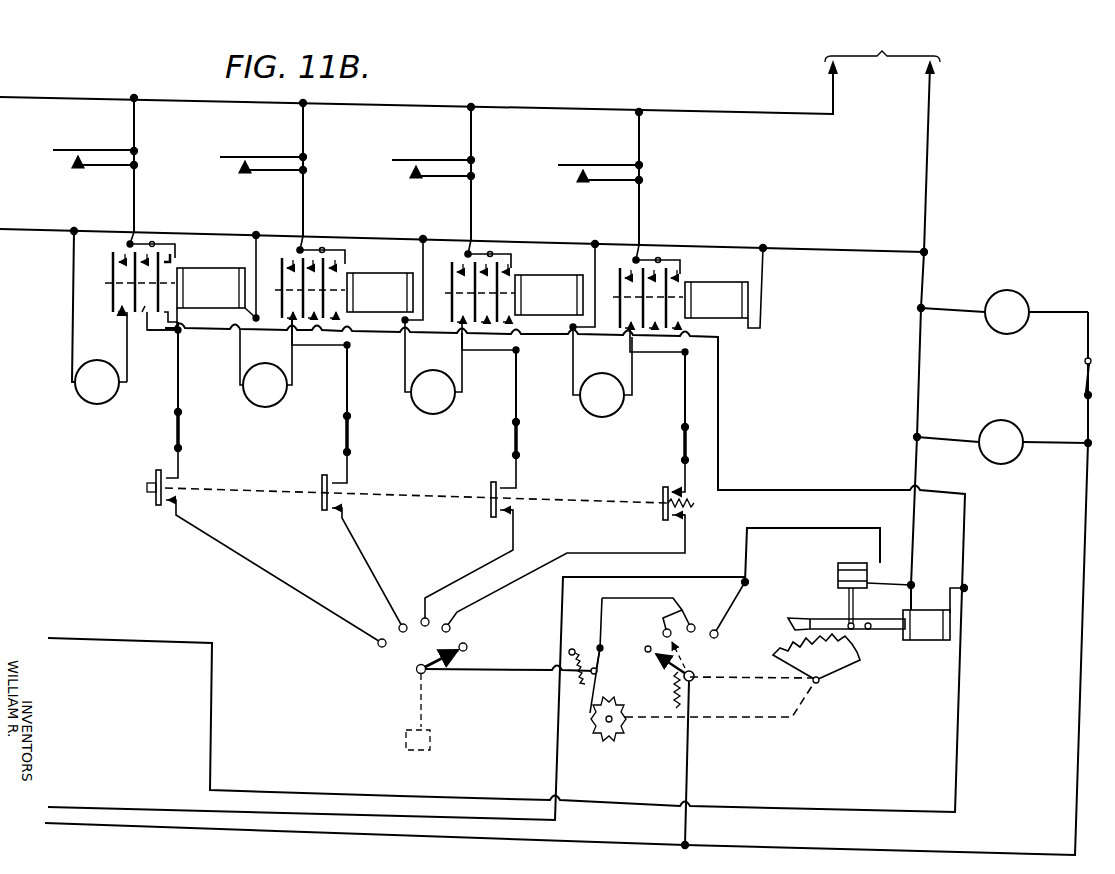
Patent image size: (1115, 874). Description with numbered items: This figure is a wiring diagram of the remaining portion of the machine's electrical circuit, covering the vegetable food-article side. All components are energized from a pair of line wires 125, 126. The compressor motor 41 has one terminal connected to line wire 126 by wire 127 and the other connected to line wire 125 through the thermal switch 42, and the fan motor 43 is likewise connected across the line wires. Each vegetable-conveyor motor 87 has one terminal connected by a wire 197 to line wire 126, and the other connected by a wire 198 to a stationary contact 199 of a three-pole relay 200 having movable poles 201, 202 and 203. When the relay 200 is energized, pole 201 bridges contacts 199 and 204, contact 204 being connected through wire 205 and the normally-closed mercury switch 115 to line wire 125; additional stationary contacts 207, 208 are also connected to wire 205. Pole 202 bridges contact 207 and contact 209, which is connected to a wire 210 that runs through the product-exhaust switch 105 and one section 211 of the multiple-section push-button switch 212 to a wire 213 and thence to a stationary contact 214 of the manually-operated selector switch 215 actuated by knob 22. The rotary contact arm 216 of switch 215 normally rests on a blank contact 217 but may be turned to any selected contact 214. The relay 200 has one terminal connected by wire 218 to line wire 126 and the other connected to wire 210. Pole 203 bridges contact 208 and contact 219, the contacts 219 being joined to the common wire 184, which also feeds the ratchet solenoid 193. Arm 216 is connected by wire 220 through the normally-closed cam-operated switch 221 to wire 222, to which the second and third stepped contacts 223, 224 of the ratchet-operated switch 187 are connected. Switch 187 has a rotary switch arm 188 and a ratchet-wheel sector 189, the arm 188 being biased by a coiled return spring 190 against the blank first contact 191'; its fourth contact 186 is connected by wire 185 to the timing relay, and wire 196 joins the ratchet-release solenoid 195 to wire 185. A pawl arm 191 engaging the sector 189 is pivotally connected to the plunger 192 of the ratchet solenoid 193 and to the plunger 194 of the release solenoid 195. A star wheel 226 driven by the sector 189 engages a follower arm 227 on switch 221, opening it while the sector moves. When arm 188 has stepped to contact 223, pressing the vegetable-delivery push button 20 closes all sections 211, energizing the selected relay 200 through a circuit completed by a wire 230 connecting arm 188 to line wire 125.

The line wire 125 is at (2, 100).
The line wire 126 is at (0, 230).
The mercury switch 115 is at (60, 160).
The wire 205 is at (135, 198).
The stationary contact 204 is at (124, 253).
The stationary contact 207 is at (142, 250).
The stationary contact 208 is at (148, 254).
The movable pole 203 is at (158, 268).
The wire 218 is at (258, 238).
The three-pole relay 200 is at (204, 270).
The movable pole 201 is at (112, 280).
The movable pole 202 is at (134, 294).
The wire 197 is at (70, 272).
The stationary contact 199 is at (122, 316).
The stationary contact 209 is at (146, 316).
The wire 198 is at (128, 354).
The stationary contact 219 is at (183, 320).
The wire 210 is at (180, 382).
The vegetable-conveyor motor 87 is at (112, 398).
The product-exhaust switch 105 is at (182, 436).
The switch section 211 is at (185, 480).
The vegetable-delivery push button 20 is at (150, 492).
The multiple-section push-button switch 212 is at (152, 505).
The wire 213 is at (248, 562).
The stationary contact 214 is at (404, 624).
The rotary contact arm 216 is at (444, 656).
The blank stationary contact 217 is at (467, 646).
The manually-operated selector switch 215 is at (410, 680).
The knob 22 is at (430, 745).
The wire 220 is at (485, 670).
The wire 222 is at (600, 610).
The cam-operated switch 221 is at (598, 672).
The follower arm 227 is at (580, 705).
The star wheel 226 is at (616, 735).
The coiled return spring 190 is at (674, 706).
The blank first stationary contact 191' is at (632, 633).
The rotary switch arm 188 is at (668, 670).
The ratchet-operated switch 187 is at (702, 660).
The wire 230 is at (688, 772).
The second stepped contact 223 is at (682, 614).
The third stepped contact 224 is at (694, 624).
The fourth stationary stepped contact 186 is at (723, 628).
The wire 196 is at (796, 528).
The ratchet-release solenoid 195 is at (851, 562).
The pawl arm 191 is at (844, 610).
The plunger 194 is at (848, 607).
The plunger 192 is at (878, 624).
The ratchet solenoid 193 is at (921, 606).
The ratchet-wheel sector 189 is at (824, 678).
The common wire 184 is at (374, 338).
The wire 185 is at (132, 804).
The wire 127 is at (935, 306).
The compressor motor 41 is at (990, 333).
The thermal switch 42 is at (1084, 390).
The fan motor 43 is at (1004, 464).